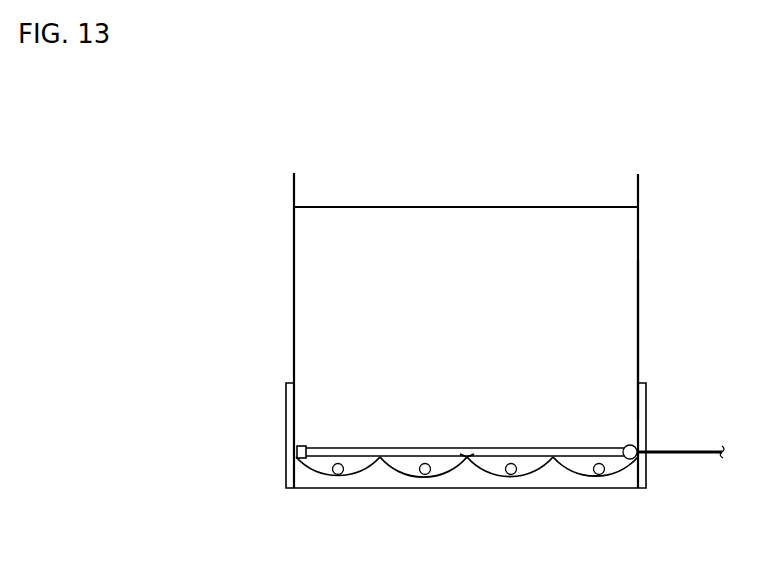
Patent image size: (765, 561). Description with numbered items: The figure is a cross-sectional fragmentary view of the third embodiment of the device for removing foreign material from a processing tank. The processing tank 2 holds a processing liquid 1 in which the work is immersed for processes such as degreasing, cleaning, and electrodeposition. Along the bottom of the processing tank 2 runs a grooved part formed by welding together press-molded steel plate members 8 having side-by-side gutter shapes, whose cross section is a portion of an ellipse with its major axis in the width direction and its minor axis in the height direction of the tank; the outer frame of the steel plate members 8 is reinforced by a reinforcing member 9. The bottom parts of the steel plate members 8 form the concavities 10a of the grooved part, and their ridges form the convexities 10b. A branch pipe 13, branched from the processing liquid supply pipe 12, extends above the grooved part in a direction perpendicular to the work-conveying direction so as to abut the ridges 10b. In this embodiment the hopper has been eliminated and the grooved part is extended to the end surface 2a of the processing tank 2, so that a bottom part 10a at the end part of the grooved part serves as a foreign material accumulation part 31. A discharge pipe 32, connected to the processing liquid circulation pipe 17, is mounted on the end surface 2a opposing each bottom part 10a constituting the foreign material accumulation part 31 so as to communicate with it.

The processing liquid 1 is at (337, 220).
The processing tank 2 is at (655, 230).
The end surface 2a is at (549, 313).
The steel plate member 8 is at (467, 474).
The reinforcing member 9 is at (445, 482).
The concavity 10a is at (412, 469).
The convexity 10b is at (467, 456).
The processing liquid supply pipe 12 is at (628, 445).
The branch pipe 13 is at (563, 450).
The processing liquid circulation pipe 17 is at (677, 459).
The foreign material accumulation part 31 is at (500, 475).
The discharge pipe 32 is at (597, 473).